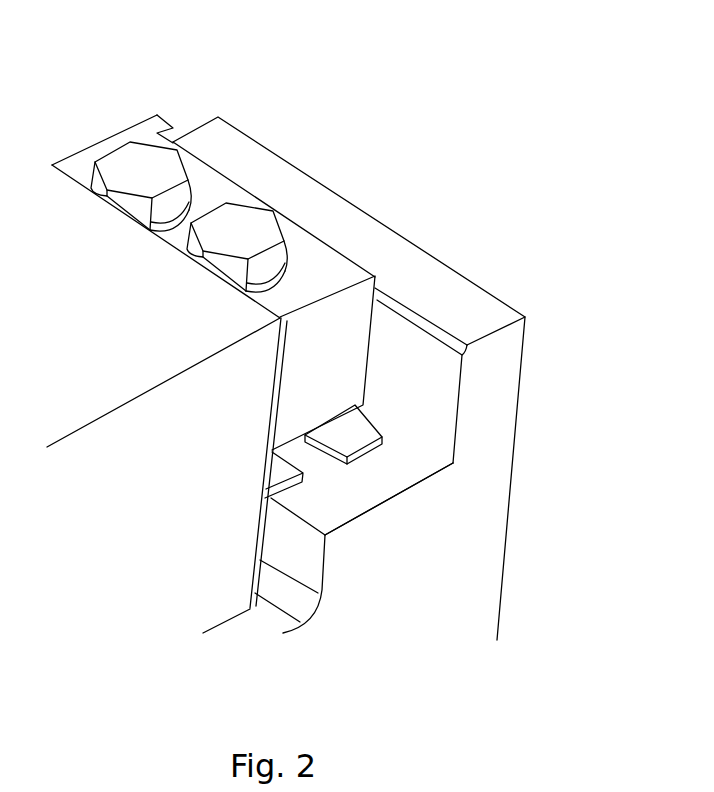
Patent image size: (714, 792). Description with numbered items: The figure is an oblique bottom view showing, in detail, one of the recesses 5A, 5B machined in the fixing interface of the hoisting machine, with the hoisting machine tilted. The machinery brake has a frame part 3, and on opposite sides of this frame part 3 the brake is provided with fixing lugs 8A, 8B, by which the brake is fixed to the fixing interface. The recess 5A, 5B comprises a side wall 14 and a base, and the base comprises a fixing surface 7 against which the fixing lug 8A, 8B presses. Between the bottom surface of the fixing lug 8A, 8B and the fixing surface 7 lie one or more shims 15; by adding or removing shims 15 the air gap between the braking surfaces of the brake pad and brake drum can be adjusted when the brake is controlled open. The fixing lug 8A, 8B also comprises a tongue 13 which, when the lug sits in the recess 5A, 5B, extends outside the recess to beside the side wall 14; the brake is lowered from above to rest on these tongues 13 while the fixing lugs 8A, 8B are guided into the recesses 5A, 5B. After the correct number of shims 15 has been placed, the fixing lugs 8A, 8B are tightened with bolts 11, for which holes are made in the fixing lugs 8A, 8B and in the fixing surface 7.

The frame part 3 is at (73, 327).
The recess 5A is at (403, 404).
The recess 5B is at (335, 375).
The fixing surface 7 is at (380, 478).
The fixing lug 8A is at (349, 348).
The fixing lug 8B is at (318, 263).
The bolt 11 is at (162, 165).
The tongue 13 is at (163, 113).
The side wall 14 is at (433, 400).
The shim 15 is at (345, 522).